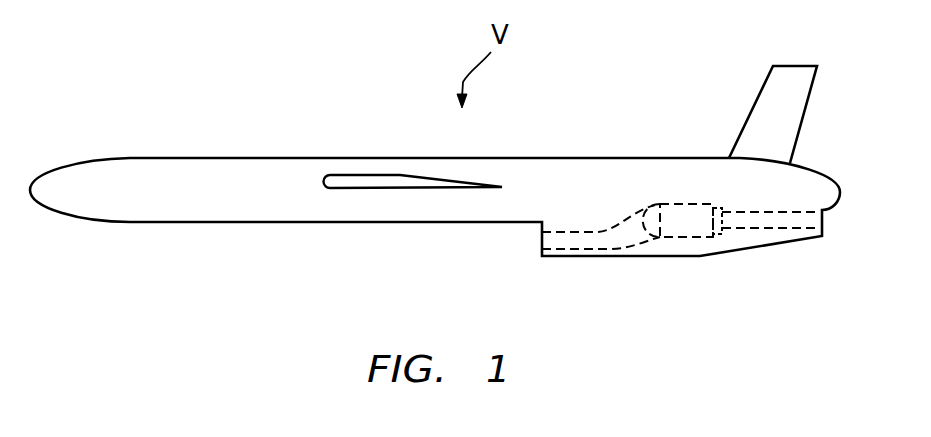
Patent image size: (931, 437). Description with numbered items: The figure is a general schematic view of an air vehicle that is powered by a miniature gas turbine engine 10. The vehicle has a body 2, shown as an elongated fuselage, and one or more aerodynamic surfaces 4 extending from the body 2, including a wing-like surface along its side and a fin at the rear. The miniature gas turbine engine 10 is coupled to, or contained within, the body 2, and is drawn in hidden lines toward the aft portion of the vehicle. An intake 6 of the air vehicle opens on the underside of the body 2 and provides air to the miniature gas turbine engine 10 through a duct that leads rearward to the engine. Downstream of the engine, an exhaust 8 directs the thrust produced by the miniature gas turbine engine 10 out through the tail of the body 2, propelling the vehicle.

The body 2 is at (182, 158).
The aerodynamic surface 4 is at (368, 188).
The intake 6 is at (572, 240).
The exhaust 8 is at (728, 222).
The miniature gas turbine engine 10 is at (683, 218).